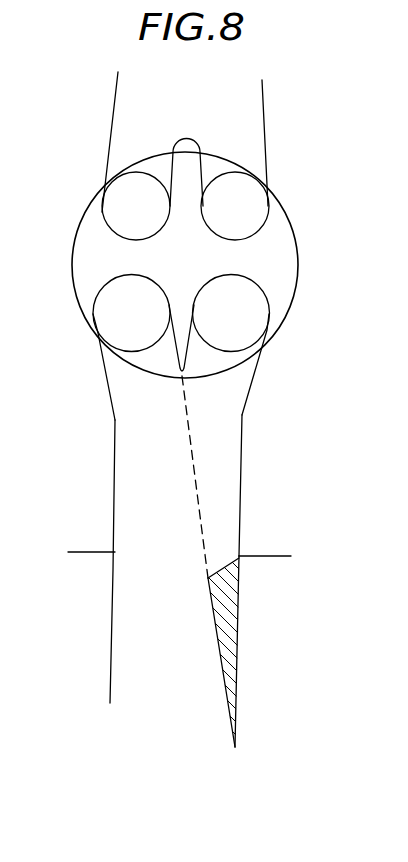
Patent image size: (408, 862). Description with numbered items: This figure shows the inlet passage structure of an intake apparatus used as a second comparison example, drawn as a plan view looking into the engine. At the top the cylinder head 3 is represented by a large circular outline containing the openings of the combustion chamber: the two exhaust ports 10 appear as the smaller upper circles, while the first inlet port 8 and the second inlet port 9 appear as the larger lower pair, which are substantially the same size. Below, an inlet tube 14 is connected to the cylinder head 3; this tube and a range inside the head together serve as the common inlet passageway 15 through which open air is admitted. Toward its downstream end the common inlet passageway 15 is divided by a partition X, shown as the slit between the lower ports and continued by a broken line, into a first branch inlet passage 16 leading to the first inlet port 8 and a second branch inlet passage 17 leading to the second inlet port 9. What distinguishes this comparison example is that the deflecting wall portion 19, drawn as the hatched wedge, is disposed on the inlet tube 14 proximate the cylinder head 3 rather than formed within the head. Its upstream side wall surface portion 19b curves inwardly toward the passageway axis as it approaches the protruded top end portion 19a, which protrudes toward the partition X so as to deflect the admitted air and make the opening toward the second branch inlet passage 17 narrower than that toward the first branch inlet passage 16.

The cylinder head 3 is at (273, 533).
The first inlet port 8 is at (107, 323).
The second inlet port 9 is at (247, 323).
The exhaust ports 10 is at (117, 208).
The inlet tube 14 is at (112, 620).
The common inlet passageway 15 is at (222, 482).
The first branch inlet passage 16 is at (140, 361).
The second branch inlet passage 17 is at (227, 360).
The partition X is at (186, 354).
The deflecting wall portion 19 is at (232, 640).
The protruded top end portion 19a is at (212, 580).
The upstream side wall surface portion 19b is at (217, 645).